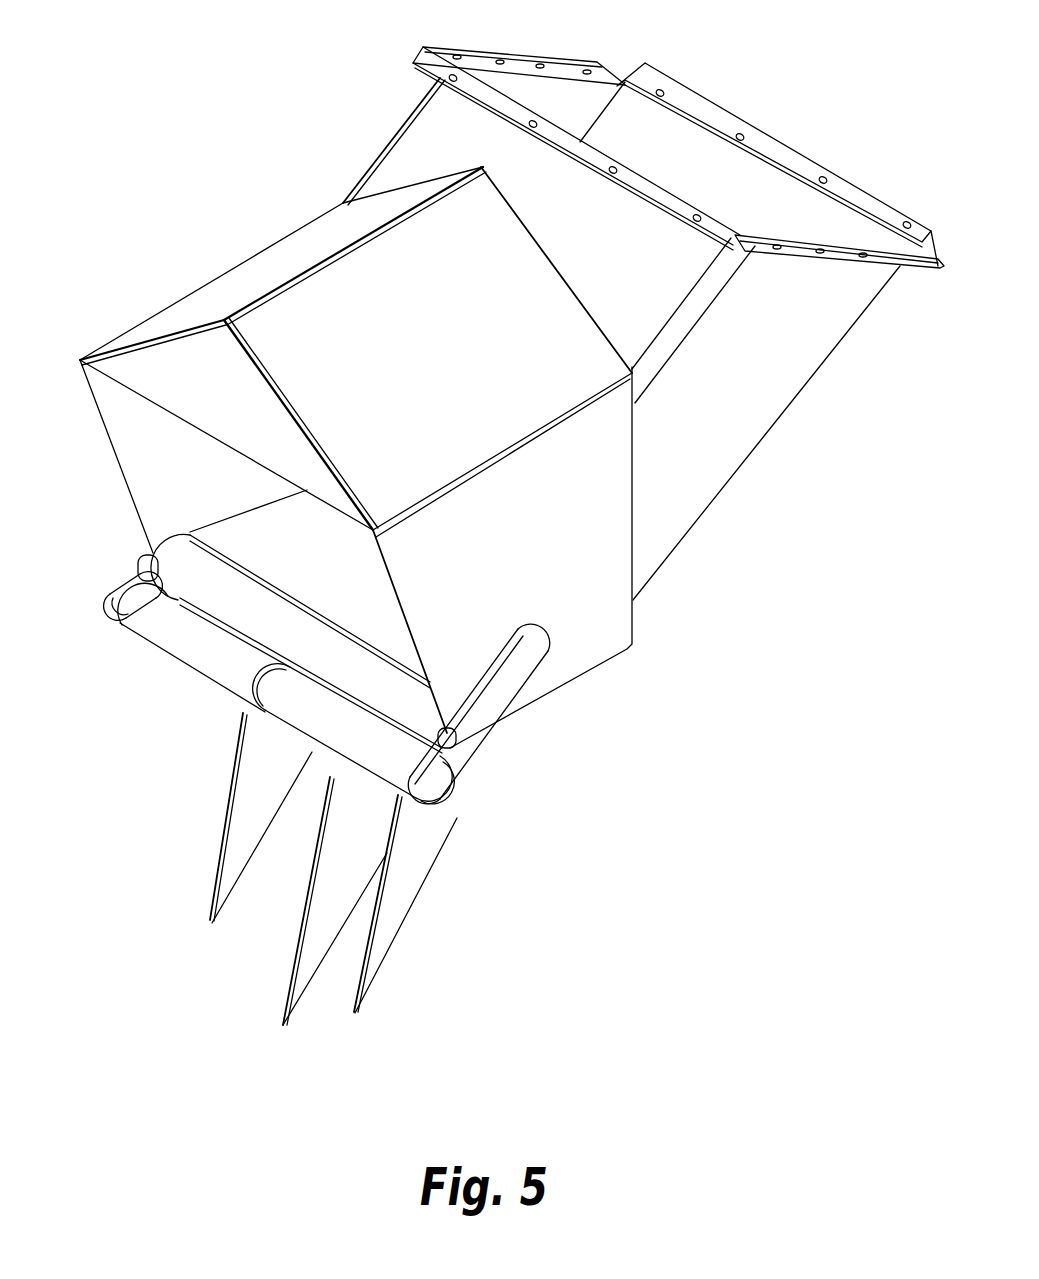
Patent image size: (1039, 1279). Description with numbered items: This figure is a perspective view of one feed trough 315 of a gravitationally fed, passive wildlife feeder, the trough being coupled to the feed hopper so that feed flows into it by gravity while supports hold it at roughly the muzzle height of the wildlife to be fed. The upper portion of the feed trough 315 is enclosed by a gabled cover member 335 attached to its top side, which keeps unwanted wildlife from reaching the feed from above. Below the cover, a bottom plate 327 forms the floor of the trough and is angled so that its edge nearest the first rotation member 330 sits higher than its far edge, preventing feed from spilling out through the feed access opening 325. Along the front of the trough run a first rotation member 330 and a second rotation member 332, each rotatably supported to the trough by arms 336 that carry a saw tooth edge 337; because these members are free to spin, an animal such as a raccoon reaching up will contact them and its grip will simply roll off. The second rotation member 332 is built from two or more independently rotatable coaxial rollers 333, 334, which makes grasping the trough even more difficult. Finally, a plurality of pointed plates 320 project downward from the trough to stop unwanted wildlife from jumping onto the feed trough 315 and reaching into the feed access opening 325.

The feed trough 315 is at (171, 51).
The gabled cover member 335 is at (262, 275).
The bottom plate 327 is at (272, 559).
The first rotation member 330 is at (258, 643).
The independently rotatable coaxial roller 333 is at (165, 646).
The independently rotatable coaxial roller 334 is at (297, 725).
The arm 336 is at (343, 681).
The saw tooth edge 337 is at (331, 687).
The feed access opening 325 is at (125, 596).
The second rotation member 332 is at (186, 837).
The pointed plates 320 is at (241, 776).